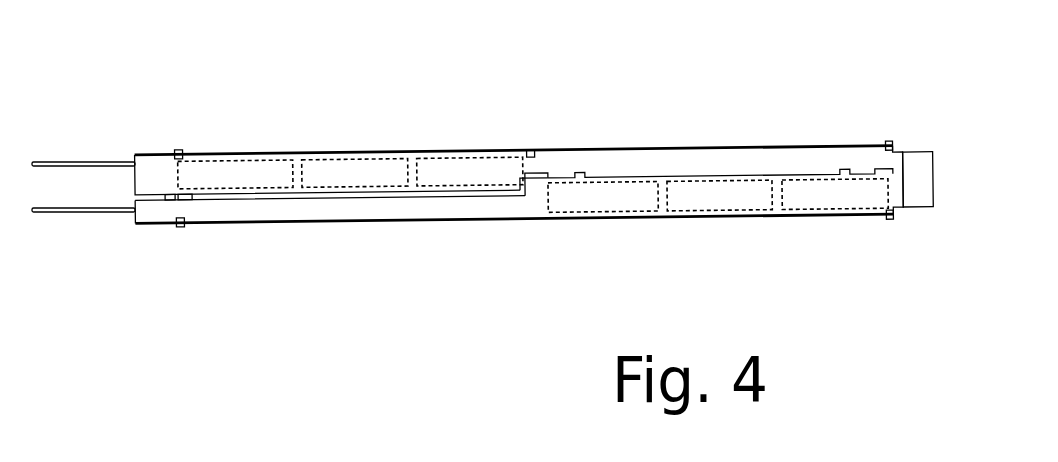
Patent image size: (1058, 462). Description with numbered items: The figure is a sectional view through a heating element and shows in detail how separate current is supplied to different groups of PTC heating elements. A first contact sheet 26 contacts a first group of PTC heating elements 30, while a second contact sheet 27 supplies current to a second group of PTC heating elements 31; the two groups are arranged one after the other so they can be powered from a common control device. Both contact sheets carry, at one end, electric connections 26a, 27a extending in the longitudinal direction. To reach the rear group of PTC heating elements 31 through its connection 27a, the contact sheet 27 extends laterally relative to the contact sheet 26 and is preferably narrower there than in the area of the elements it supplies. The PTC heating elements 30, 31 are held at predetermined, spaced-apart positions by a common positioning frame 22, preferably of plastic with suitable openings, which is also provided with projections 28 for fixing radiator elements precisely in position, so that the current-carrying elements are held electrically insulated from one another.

The positioning frame 22 is at (621, 148).
The first contact sheet 26 is at (163, 171).
The electric connection 26a is at (108, 160).
The second contact sheet 27 is at (362, 215).
The electric connection 27a is at (65, 217).
The projections 28 is at (530, 151).
The PTC heating elements 30 is at (375, 172).
The PTC heating elements 31 is at (718, 192).